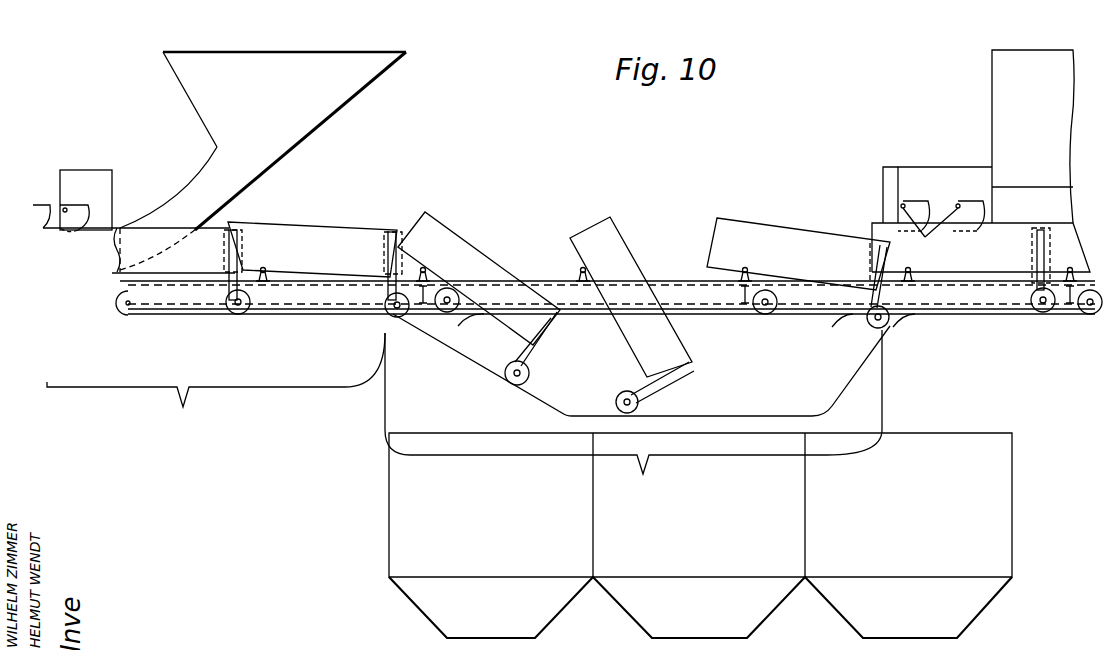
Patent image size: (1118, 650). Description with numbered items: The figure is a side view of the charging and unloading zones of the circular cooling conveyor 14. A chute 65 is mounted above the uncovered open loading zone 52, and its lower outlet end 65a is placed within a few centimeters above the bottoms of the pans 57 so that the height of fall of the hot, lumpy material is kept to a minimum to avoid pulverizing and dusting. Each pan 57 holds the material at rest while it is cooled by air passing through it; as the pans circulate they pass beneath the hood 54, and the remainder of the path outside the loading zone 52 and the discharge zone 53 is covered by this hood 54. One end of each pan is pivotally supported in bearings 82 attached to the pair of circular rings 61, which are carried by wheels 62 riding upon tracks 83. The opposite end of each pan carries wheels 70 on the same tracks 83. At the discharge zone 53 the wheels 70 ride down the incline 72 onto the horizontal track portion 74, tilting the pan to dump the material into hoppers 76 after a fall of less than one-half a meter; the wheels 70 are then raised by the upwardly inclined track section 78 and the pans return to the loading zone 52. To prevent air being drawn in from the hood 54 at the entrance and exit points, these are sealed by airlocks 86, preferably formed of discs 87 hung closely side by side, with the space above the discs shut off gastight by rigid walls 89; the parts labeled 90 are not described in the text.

The conveyor 14 is at (184, 266).
The loading zone 52 is at (216, 387).
The discharge zone 53 is at (633, 417).
The hood 54 is at (1003, 74).
The pan 57 is at (337, 238).
The circular rings 61 is at (823, 296).
The wheels 62 is at (445, 312).
The chute 65 is at (350, 91).
The lower outlet end 65a is at (236, 189).
The wheels 70 is at (238, 314).
The incline 72 is at (848, 383).
The horizontal track portion 74 is at (735, 415).
The hoppers 76 is at (425, 598).
The upwardly inclined track section 78 is at (463, 352).
The bearings 82 is at (580, 273).
The tracks 83 is at (970, 313).
The airlocks 86 is at (84, 178).
The discs 87 is at (92, 206).
The rigid walls 89 is at (58, 179).
The lever 90 is at (63, 213).